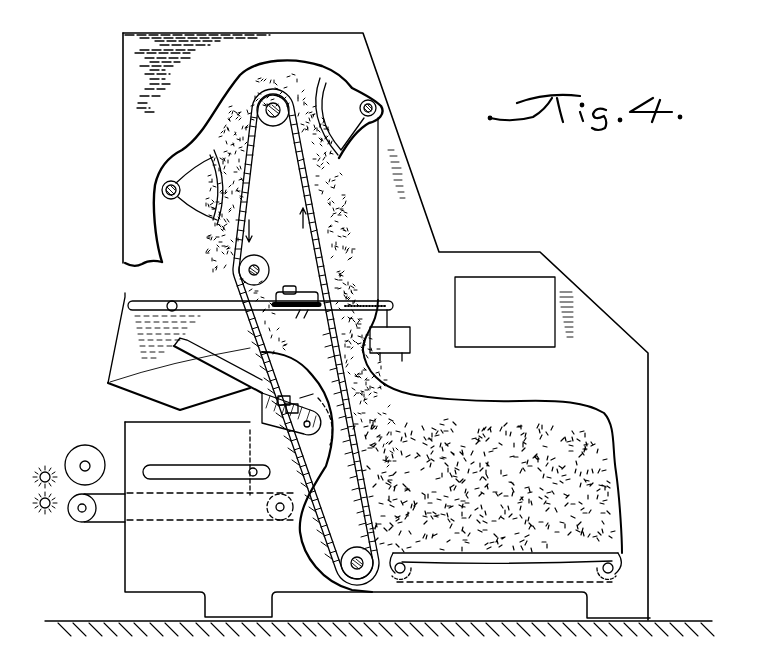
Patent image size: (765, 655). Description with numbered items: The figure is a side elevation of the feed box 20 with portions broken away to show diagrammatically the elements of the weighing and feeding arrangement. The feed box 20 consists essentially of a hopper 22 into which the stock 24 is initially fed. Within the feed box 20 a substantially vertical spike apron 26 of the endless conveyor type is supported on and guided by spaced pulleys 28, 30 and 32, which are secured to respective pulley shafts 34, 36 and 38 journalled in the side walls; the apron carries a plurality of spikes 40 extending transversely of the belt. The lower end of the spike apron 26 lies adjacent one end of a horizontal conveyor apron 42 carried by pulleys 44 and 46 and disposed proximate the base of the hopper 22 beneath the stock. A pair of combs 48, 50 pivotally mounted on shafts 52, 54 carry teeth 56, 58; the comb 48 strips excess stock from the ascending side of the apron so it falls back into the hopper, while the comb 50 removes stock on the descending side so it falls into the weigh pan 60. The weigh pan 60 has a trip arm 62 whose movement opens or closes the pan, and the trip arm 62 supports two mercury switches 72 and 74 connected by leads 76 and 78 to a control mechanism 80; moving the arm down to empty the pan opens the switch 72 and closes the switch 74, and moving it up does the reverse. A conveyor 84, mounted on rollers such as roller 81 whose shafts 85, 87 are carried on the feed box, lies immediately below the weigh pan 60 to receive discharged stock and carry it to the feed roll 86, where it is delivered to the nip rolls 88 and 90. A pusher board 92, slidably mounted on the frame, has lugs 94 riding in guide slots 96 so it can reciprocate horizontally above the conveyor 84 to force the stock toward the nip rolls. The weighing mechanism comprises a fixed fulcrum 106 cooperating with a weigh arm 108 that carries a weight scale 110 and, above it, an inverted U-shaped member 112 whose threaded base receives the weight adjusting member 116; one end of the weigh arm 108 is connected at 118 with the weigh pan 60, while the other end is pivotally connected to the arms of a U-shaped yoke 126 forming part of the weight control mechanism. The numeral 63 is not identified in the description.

The feed box 20 is at (578, 271).
The hopper 22 is at (590, 433).
The stock 24 is at (590, 503).
The spike apron 26 is at (306, 337).
The pulley 28 is at (257, 114).
The pulley 30 is at (262, 262).
The pulley 32 is at (340, 562).
The pulley shaft 34 is at (280, 128).
The pulley shaft 36 is at (262, 270).
The pulley shaft 38 is at (352, 585).
The spikes 40 is at (329, 222).
The horizontal conveyor apron 42 is at (537, 556).
The pulley 44 is at (397, 576).
The pulley 46 is at (616, 566).
The comb 48 is at (352, 98).
The comb 50 is at (165, 201).
The shaft 52 is at (378, 108).
The shaft 54 is at (156, 192).
The teeth 56 is at (312, 85).
The teeth 58 is at (217, 226).
The weigh pan 60 is at (140, 353).
The trip arm 62 is at (108, 384).
The pin 63 is at (282, 521).
The mercury switch 72 is at (262, 406).
The mercury switch 74 is at (287, 414).
The lead 76 is at (290, 406).
The lead 78 is at (256, 428).
The control mechanism 80 is at (505, 312).
The roller 81 is at (77, 516).
The conveyor 84 is at (112, 524).
The shaft 85 is at (82, 520).
The feed roll 86 is at (96, 441).
The shaft 87 is at (276, 510).
The nip roll 88 is at (40, 466).
The nip roll 90 is at (42, 510).
The pusher board 92 is at (248, 449).
The lug 94 is at (252, 478).
The guide slot 96 is at (200, 481).
The fixed fulcrum 106 is at (236, 322).
The weigh arm 108 is at (309, 311).
The weight scale 110 is at (316, 312).
The inverted U-shaped member 112 is at (340, 299).
The weight adjusting member 116 is at (294, 286).
The connection 118 is at (172, 300).
The U-shaped yoke 126 is at (406, 325).